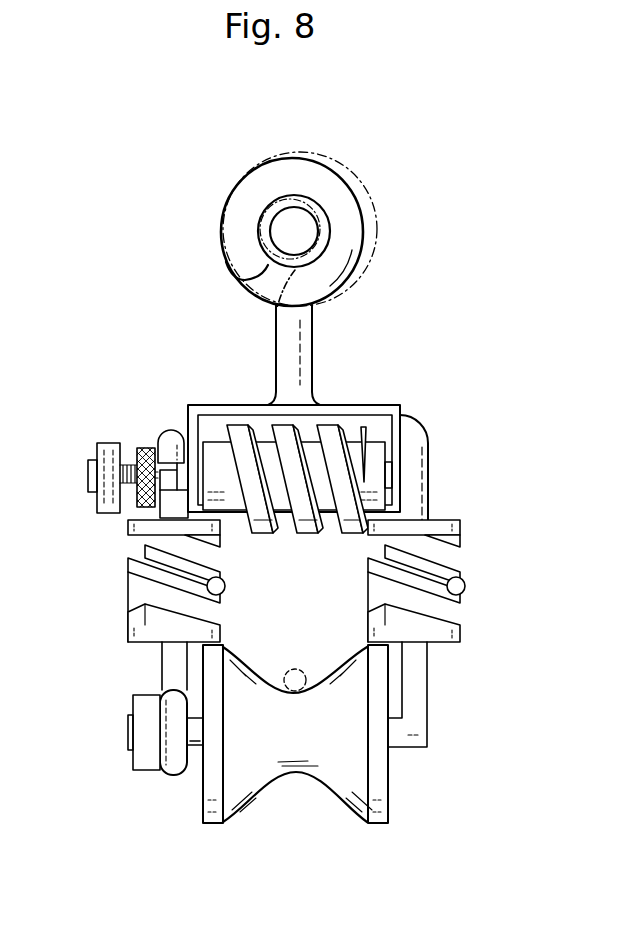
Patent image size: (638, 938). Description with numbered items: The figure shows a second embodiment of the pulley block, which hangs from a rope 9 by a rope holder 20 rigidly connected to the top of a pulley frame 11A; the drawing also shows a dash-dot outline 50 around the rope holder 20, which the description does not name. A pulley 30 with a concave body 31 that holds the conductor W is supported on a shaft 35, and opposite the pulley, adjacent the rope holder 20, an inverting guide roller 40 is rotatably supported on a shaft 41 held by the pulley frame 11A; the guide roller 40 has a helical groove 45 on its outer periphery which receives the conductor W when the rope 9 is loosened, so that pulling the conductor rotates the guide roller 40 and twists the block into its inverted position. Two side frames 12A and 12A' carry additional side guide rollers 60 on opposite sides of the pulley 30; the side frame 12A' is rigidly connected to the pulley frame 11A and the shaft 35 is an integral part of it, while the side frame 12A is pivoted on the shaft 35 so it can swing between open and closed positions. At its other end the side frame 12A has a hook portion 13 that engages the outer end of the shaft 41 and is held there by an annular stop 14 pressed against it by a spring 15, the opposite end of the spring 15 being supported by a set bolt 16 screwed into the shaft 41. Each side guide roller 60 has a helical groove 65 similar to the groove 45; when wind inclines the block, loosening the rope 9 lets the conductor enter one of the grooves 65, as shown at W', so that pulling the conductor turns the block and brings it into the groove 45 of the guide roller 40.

The rope 9 is at (310, 228).
The pulley frame 11A is at (372, 404).
The side frame 12A is at (110, 674).
The side frame 12A' is at (460, 694).
The hook portion 13 is at (172, 435).
The annular stop 14 is at (147, 450).
The spring 15 is at (130, 450).
The set bolt 16 is at (102, 498).
The rope holder 20 is at (226, 228).
The pulley 30 is at (360, 763).
The concave body 31 is at (297, 776).
The shaft 35 is at (198, 747).
The inverting guide roller 40 is at (380, 455).
The shaft 41 is at (390, 478).
The helical groove 45 is at (332, 527).
The pivot circle 50 is at (366, 183).
The side guide rollers 60 is at (146, 540).
The helical groove 65 is at (225, 587).
The conductor W is at (306, 652).
The conductor position W' is at (242, 558).